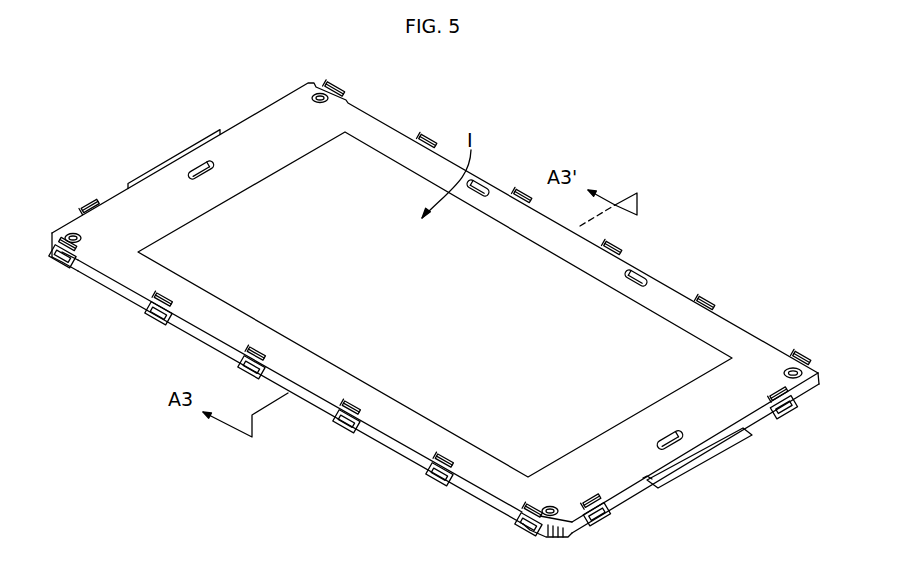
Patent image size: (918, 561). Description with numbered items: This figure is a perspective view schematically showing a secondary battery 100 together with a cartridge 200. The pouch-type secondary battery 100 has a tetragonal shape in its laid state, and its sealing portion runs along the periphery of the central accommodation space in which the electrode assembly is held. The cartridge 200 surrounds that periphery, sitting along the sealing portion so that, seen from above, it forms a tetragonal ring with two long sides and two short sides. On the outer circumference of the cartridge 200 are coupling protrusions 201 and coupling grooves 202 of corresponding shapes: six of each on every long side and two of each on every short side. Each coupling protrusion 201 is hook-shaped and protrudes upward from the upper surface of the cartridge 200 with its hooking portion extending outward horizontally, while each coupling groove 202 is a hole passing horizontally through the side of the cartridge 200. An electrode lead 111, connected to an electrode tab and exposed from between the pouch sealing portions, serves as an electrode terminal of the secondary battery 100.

The secondary battery 100 is at (695, 353).
The cartridge 200 is at (763, 345).
The coupling protrusion 201 is at (147, 298).
The coupling groove 202 is at (153, 316).
The electrode lead 111 is at (720, 443).